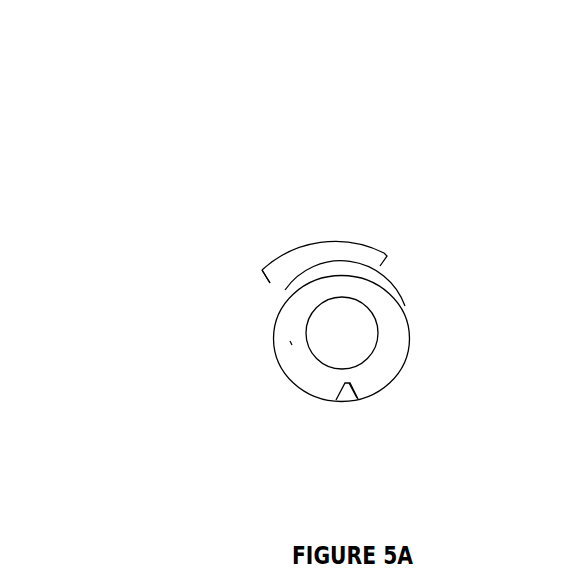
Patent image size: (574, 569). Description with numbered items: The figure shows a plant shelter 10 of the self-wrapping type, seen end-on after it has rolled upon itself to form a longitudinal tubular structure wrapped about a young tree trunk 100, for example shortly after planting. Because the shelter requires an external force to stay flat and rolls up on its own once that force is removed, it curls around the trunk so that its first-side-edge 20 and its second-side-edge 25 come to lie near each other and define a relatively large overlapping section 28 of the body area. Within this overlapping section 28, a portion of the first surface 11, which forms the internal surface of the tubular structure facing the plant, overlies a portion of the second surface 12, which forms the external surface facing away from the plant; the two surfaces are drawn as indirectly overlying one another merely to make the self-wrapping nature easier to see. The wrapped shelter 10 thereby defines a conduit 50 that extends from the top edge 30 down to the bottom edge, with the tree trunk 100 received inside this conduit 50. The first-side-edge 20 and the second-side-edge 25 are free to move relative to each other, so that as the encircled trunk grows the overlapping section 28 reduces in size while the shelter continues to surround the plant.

The plant shelter 10 is at (460, 172).
The first surface 11 is at (357, 398).
The second surface 12 is at (326, 400).
The first-side-edge 20 is at (410, 308).
The second-side-edge 25 is at (274, 300).
The overlapping section 28 is at (353, 241).
The top edge 30 is at (287, 373).
The conduit 50 is at (290, 341).
The tree trunk 100 is at (350, 343).